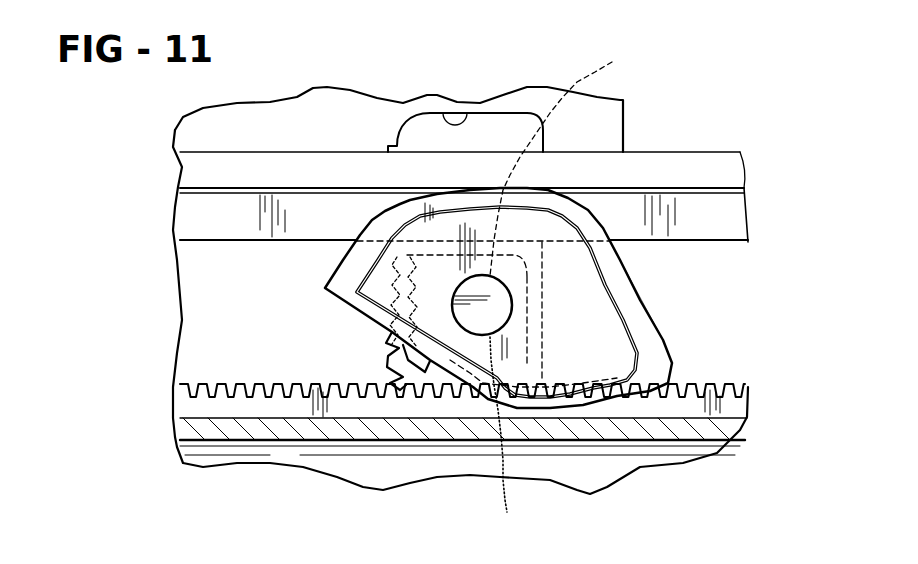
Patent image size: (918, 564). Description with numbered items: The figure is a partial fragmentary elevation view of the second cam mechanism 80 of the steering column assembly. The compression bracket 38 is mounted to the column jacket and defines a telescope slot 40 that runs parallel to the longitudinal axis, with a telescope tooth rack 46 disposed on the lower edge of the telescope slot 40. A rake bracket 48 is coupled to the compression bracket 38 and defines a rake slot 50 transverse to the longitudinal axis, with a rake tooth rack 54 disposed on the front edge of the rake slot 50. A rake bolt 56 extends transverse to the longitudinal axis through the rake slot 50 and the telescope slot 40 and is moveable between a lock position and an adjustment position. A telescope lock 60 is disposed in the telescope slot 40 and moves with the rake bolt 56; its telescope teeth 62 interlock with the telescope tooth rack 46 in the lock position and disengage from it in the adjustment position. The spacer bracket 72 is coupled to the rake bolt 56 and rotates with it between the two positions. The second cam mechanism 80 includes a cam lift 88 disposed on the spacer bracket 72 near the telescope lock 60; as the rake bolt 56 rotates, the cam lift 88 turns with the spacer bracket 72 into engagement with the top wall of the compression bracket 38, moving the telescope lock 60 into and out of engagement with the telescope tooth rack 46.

The compression bracket 38 is at (747, 207).
The telescope slot 40 is at (690, 242).
The telescope tooth rack 46 is at (680, 384).
The rake bracket 48 is at (623, 125).
The rake slot 50 is at (466, 130).
The rake tooth rack 54 is at (430, 393).
The rake bolt 56 is at (590, 205).
The telescope lock 60 is at (565, 161).
The telescope teeth 62 is at (513, 439).
The spacer bracket 72 is at (661, 340).
The second cam mechanism 80 is at (645, 270).
The cam lift 88 is at (497, 288).